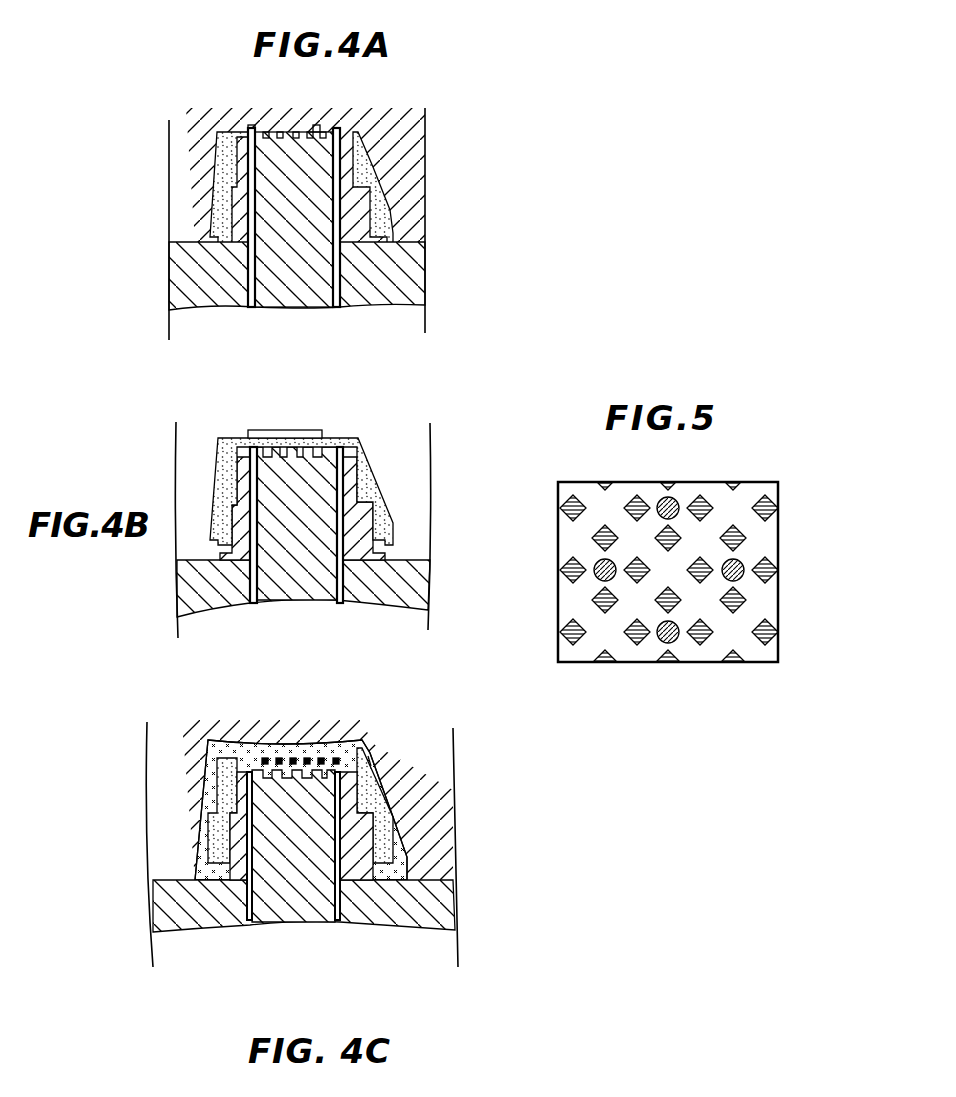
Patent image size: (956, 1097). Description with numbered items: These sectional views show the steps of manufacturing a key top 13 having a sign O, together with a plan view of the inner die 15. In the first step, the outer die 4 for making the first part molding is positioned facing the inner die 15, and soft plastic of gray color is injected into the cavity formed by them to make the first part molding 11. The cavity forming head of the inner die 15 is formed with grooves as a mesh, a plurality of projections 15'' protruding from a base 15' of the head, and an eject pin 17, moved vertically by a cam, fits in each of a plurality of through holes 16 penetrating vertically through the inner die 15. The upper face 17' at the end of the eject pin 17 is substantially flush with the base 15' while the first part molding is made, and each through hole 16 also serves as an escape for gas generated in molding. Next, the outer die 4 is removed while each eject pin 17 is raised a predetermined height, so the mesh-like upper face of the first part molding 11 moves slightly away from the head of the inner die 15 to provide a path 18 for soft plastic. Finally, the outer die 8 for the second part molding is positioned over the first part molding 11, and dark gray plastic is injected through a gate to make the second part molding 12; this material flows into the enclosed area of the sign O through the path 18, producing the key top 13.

In FIG. 4A, the outer die 4 is at (378, 130).
In FIG. 4C, the outer die 4 is at (318, 800).
In FIG. 4C, the outer die 8 is at (370, 765).
In FIG. 4A, the first part molding 11 is at (367, 163).
In FIG. 4B, the first part molding 11 is at (370, 487).
In FIG. 4C, the first part molding 11 is at (368, 797).
In FIG. 4C, the second part molding 12 is at (388, 918).
In FIG. 4C, the key top 13 is at (395, 817).
In FIG. 4A, the inner die 15 is at (290, 212).
In FIG. 4B, the inner die 15 is at (302, 523).
In FIG. 4C, the inner die 15 is at (305, 856).
In FIG. 5, the inner die 15 is at (668, 556).
In FIG. 4A, the base 15' is at (272, 231).
In FIG. 4B, the base 15' is at (303, 588).
In FIG. 4C, the base 15' is at (304, 906).
In FIG. 5, the base 15' is at (668, 603).
In FIG. 5, the projection 15'' is at (733, 607).
In FIG. 4A, the through hole 16 is at (248, 300).
In FIG. 4B, the through hole 16 is at (253, 603).
In FIG. 4A, the eject pin 17 is at (360, 217).
In FIG. 4B, the eject pin 17 is at (305, 525).
In FIG. 4C, the eject pin 17 is at (293, 846).
In FIG. 5, the upper face 17' is at (616, 624).
In FIG. 4B, the path 18 is at (327, 455).